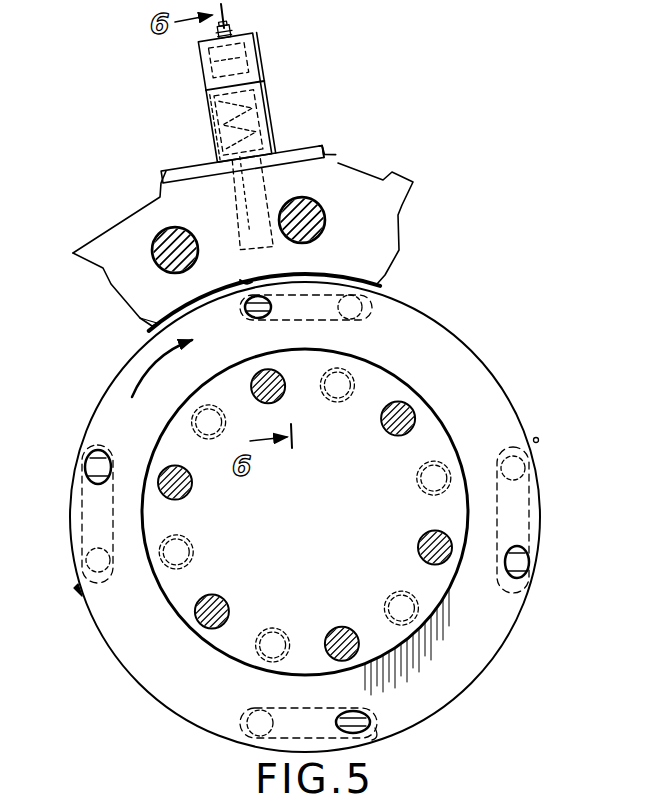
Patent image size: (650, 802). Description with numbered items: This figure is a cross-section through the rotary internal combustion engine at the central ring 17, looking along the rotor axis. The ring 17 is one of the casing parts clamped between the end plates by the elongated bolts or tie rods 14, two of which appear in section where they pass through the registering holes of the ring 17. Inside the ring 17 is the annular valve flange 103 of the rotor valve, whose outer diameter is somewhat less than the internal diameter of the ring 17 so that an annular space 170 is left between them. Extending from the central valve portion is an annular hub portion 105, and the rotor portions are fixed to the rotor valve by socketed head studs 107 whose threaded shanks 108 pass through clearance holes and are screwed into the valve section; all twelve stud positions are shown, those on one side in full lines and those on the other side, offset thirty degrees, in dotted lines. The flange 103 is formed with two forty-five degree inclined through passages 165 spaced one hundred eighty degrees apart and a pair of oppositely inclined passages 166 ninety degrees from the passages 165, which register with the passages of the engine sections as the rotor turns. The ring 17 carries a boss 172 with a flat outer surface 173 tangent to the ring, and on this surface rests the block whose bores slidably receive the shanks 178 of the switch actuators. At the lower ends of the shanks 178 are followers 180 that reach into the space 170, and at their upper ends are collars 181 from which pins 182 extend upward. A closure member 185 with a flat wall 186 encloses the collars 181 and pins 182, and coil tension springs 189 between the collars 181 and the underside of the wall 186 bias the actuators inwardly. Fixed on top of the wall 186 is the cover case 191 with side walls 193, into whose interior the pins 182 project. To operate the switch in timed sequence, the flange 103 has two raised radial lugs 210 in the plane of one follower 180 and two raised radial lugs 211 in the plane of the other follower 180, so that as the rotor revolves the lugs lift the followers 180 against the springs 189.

The tie rods 14 is at (172, 248).
The central ring 17 is at (396, 166).
The annular valve flange 103 is at (505, 636).
The annular hub portions 105 is at (328, 511).
The socketed head studs 107 is at (428, 430).
The threaded shanks 108 is at (456, 398).
The inclined through passages 165 is at (88, 472).
The oppositely inclined passages 166 is at (256, 319).
The annular space 170 is at (157, 331).
The boss 172 is at (321, 152).
The flat outer surface 173 is at (329, 150).
The shanks 178 is at (242, 164).
The followers 180 is at (298, 280).
The collars 181 is at (236, 98).
The pins 182 is at (250, 203).
The closure member 185 is at (215, 127).
The flat wall 186 is at (235, 85).
The coil tension springs 189 is at (238, 123).
The cover case 191 is at (224, 29).
The side walls 193 is at (228, 60).
The raised radial lugs 210 is at (80, 593).
The raised radial lugs 211 is at (538, 440).